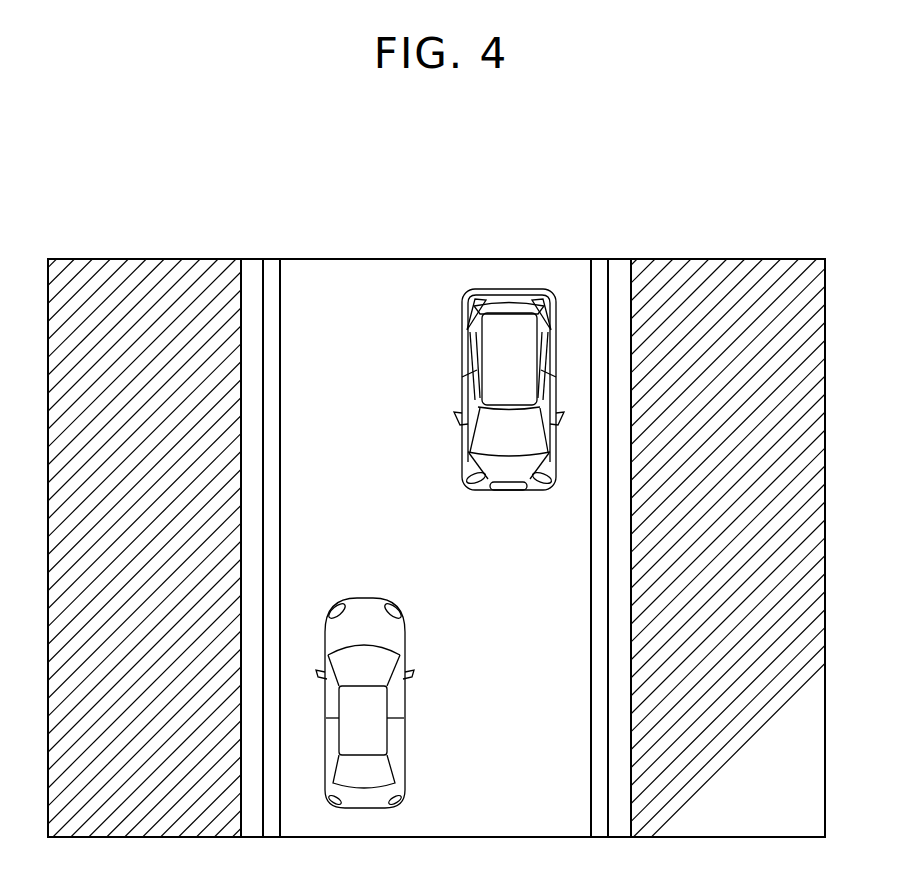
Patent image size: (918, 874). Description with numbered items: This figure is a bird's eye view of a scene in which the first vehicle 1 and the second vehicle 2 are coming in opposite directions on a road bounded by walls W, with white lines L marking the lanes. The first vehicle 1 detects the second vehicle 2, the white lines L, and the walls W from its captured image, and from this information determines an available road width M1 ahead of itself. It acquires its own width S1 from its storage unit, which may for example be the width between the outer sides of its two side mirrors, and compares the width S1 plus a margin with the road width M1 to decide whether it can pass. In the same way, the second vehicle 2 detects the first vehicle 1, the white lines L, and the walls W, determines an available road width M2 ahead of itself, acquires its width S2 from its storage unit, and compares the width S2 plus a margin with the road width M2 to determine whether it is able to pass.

The first vehicle 1 is at (511, 476).
The second vehicle 2 is at (364, 613).
The wall W is at (149, 283).
The white line L is at (273, 272).
The width of the first vehicle S1 is at (536, 393).
The width of the second vehicle S2 is at (340, 701).
The road width M1 is at (590, 701).
The road width M2 is at (461, 393).